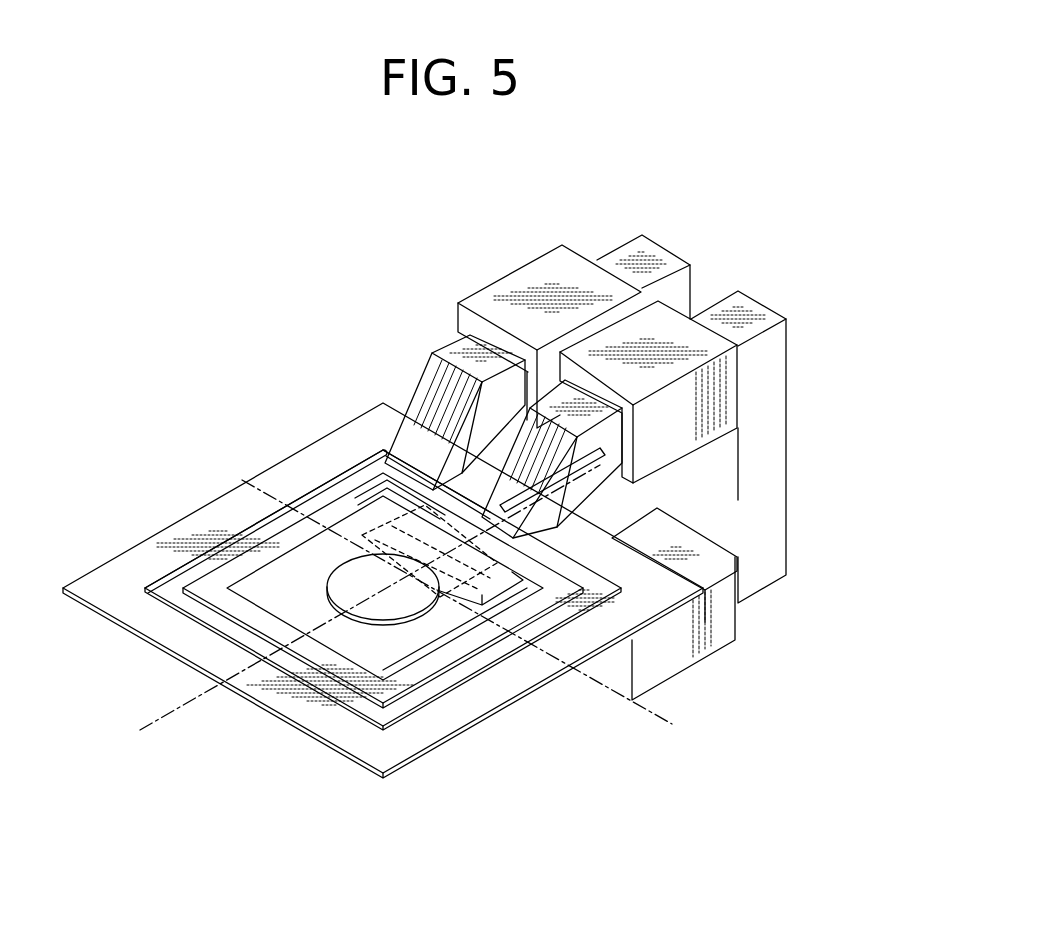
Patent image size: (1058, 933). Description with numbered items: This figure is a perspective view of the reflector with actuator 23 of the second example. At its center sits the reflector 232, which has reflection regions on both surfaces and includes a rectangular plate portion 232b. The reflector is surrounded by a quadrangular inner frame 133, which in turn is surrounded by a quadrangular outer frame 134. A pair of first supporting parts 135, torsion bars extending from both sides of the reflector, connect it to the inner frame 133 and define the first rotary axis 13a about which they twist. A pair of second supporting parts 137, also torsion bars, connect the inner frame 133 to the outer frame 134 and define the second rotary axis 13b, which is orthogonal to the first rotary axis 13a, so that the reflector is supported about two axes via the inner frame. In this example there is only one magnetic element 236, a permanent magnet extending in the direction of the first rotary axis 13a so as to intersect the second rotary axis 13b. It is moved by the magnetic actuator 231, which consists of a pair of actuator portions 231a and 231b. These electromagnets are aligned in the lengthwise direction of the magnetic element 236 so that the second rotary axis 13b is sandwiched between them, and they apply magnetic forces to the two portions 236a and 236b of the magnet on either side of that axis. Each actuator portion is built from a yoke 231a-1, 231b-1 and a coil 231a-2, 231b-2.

The reflector with actuator 23 is at (452, 156).
The magnetic actuator 231 is at (672, 430).
The actuator portion 231a is at (629, 298).
The yoke 231a-1 is at (670, 248).
The coil 231a-2 is at (512, 268).
The actuator portion 231b is at (723, 467).
The yoke 231b-1 is at (762, 298).
The coil 231b-2 is at (740, 367).
The reflector 232 is at (352, 628).
The rectangular plate portion 232b is at (350, 525).
The magnetic element 236 is at (604, 415).
The portion of the magnetic element 236a is at (443, 460).
The portion of the magnetic element 236b is at (560, 543).
The inner frame 133 is at (393, 710).
The outer frame 134 is at (383, 770).
The first supporting parts 135 is at (340, 513).
The second supporting parts 137 is at (283, 632).
The first rotary axis 13a is at (672, 724).
The second rotary axis 13b is at (170, 717).